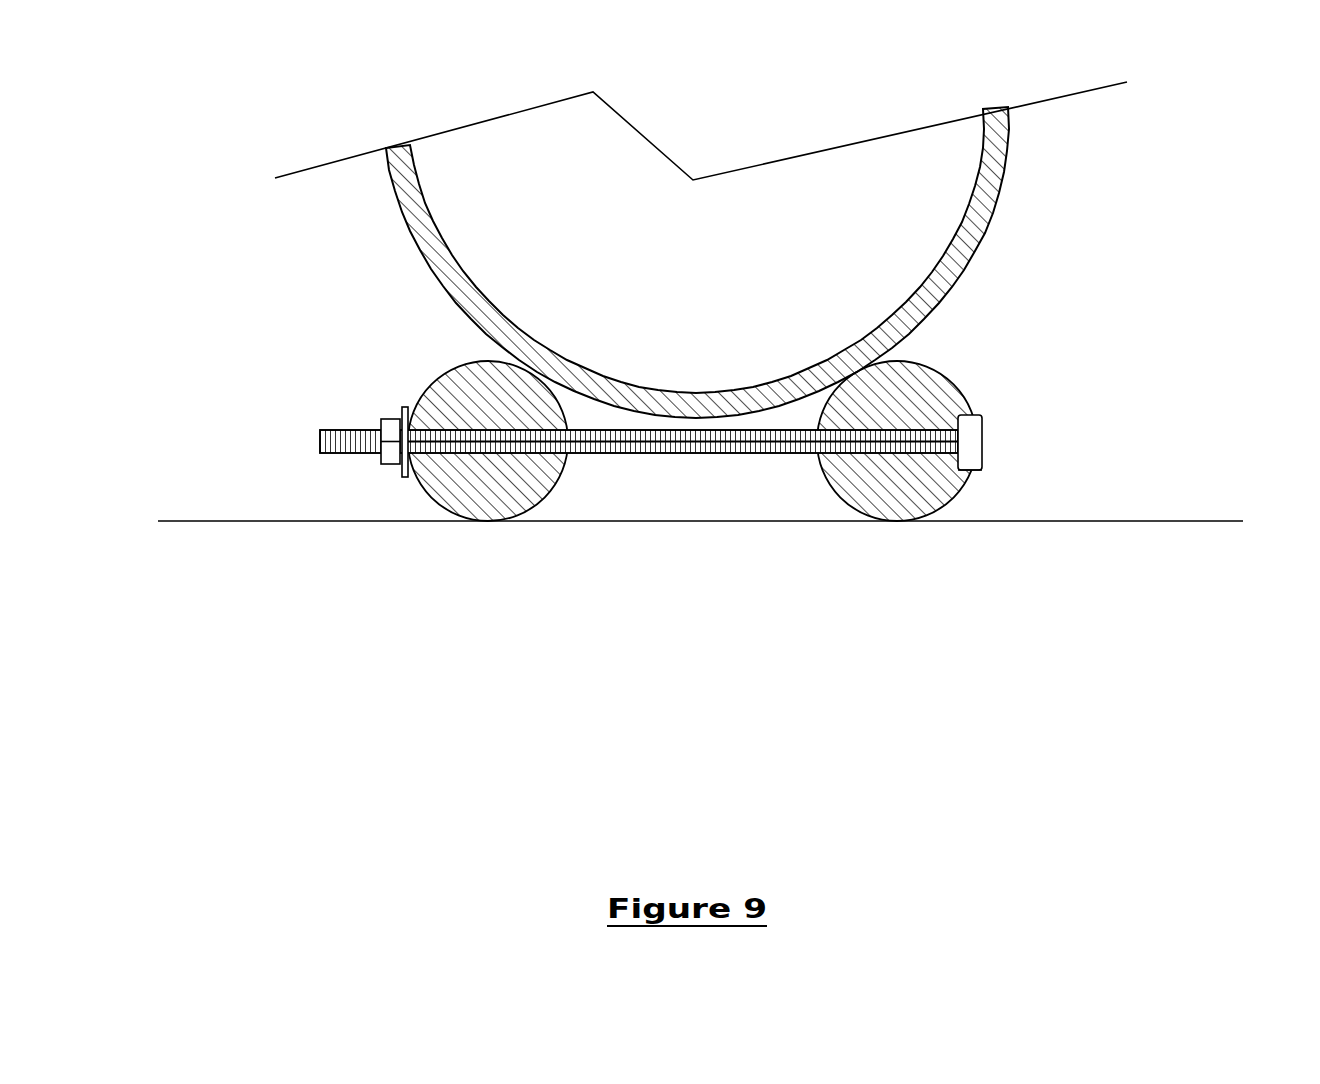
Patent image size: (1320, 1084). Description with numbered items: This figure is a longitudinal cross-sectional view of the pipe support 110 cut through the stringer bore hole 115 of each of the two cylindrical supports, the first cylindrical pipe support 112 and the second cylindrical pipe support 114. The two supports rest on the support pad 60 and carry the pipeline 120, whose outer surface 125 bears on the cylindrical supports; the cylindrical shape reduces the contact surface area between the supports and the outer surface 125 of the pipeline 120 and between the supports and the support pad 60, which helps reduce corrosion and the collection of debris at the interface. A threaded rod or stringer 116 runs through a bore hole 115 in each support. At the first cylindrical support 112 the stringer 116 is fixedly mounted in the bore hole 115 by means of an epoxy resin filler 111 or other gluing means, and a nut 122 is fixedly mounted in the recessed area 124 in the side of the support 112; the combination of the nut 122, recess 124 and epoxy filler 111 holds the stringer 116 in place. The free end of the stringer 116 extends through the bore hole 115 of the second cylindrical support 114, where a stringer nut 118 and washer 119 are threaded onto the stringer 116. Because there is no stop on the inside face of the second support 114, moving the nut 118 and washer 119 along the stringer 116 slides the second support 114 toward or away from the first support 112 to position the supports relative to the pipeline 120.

The support pad 60 is at (717, 485).
The pipe support 110 is at (639, 609).
The epoxy resin filler 111 is at (932, 520).
The first cylindrical pipe support 112 is at (1007, 415).
The second cylindrical pipe support 114 is at (373, 420).
The bore hole 115 is at (483, 522).
The threaded rod or stringer 116 is at (639, 549).
The stringer nut 118 is at (261, 514).
The washer 119 is at (301, 541).
The pipeline 120 is at (754, 159).
The nut 122 is at (1105, 417).
The recessed area 124 is at (1083, 523).
The outer surface 125 is at (805, 262).